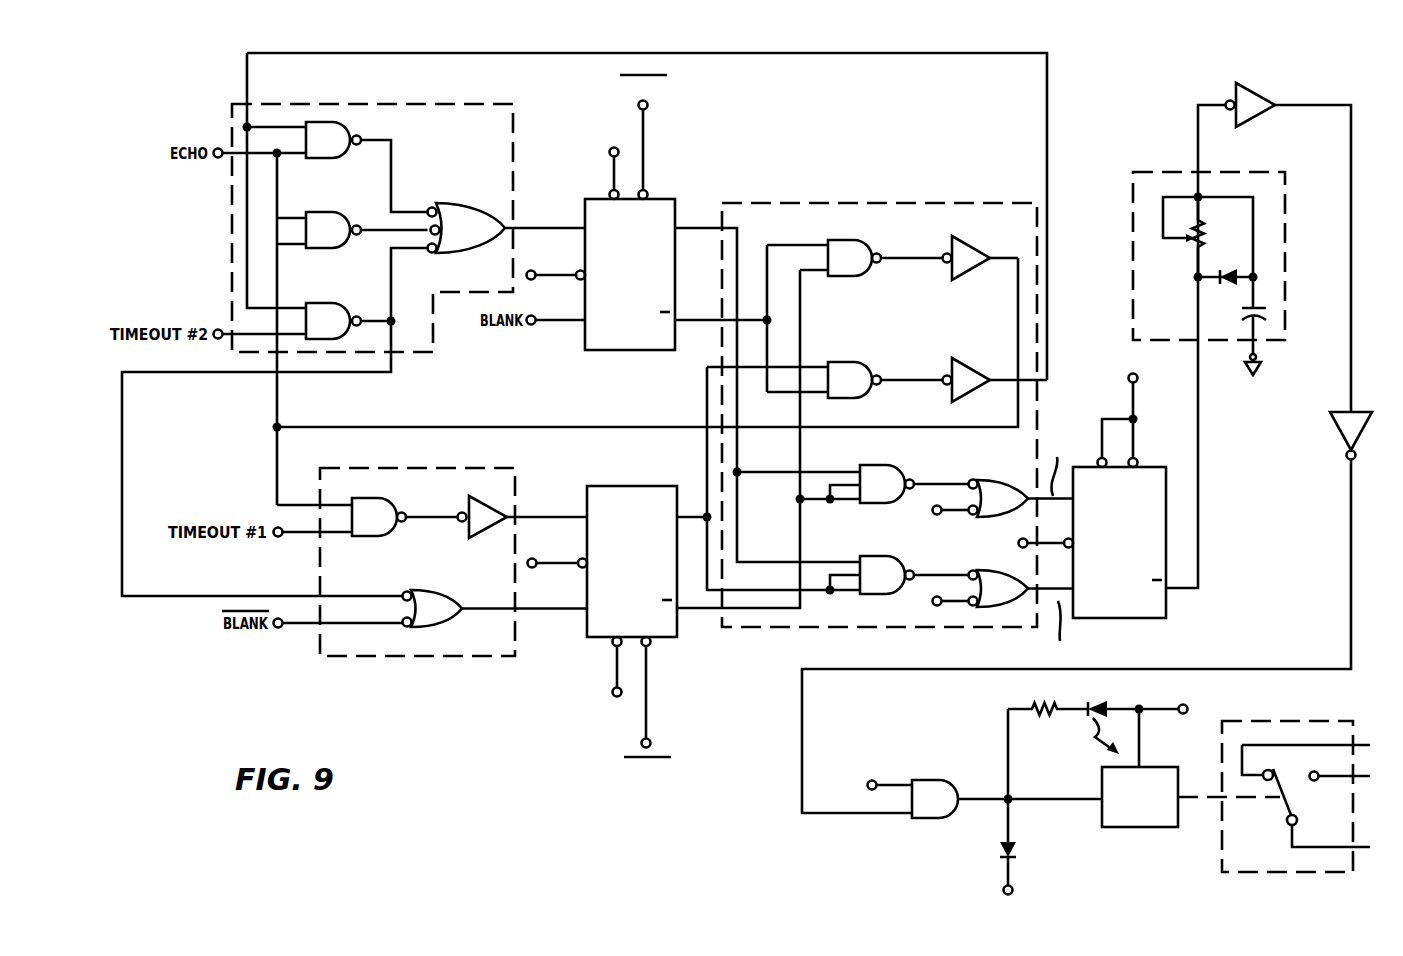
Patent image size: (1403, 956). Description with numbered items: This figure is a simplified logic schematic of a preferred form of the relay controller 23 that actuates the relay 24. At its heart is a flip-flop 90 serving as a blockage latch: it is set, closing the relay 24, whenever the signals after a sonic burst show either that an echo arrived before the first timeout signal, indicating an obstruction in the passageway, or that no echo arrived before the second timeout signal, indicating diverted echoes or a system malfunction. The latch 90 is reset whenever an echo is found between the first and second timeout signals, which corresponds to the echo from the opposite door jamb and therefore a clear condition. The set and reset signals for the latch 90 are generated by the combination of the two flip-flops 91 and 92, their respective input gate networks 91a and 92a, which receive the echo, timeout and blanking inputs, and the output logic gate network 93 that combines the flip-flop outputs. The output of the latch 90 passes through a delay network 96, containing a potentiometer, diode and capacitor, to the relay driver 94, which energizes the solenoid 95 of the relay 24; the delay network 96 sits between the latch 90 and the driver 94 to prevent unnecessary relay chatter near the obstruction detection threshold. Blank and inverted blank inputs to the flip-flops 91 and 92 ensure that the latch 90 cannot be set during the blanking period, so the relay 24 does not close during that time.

The relay controller 23 is at (520, 397).
The input gate network 91a is at (485, 103).
The flip-flop 91 is at (666, 198).
The output logic gate network 93 is at (878, 202).
The flip-flop 90 is at (1152, 466).
The delay network 96 is at (1173, 172).
The input gate network 92a is at (488, 468).
The flip-flop 92 is at (640, 488).
The relay driver 94 is at (935, 780).
The solenoid 95 is at (1107, 812).
The relay 24 is at (1222, 858).